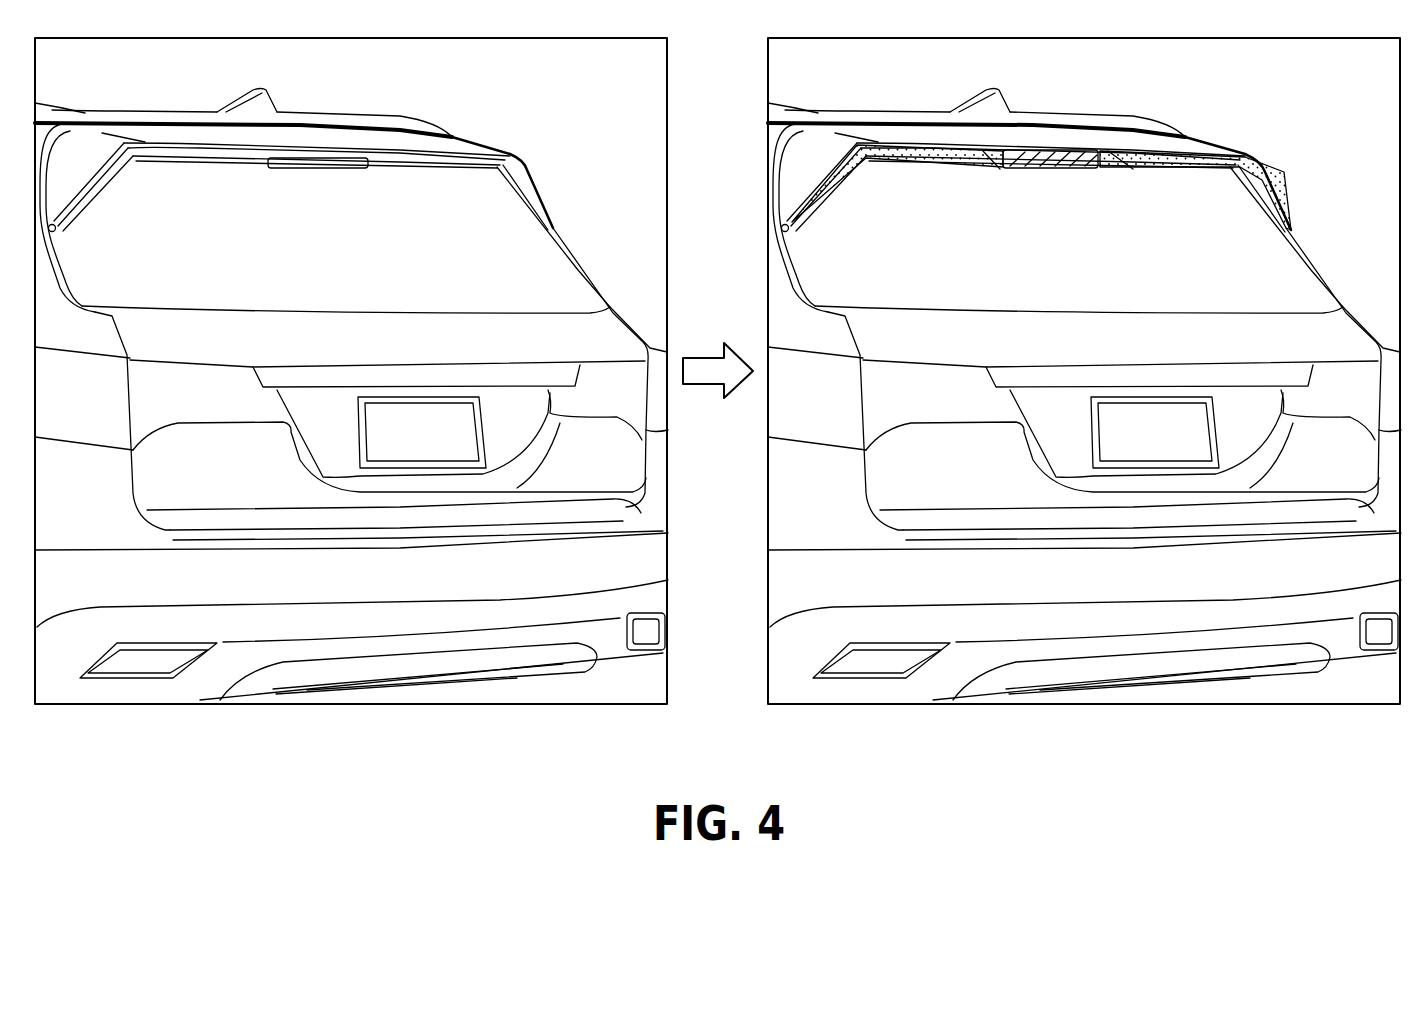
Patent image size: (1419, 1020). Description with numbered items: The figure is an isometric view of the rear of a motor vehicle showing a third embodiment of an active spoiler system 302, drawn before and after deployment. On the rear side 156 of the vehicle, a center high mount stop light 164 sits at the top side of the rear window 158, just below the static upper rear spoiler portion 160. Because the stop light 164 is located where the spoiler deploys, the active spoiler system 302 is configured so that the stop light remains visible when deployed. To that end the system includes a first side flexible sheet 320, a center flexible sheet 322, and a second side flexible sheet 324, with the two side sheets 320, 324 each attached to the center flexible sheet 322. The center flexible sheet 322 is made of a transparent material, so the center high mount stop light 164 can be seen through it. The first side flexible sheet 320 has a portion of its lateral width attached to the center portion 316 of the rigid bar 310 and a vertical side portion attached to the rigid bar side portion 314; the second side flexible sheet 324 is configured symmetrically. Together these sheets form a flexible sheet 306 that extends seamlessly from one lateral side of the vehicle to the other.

The rear side 156 is at (636, 421).
The rear window 158 is at (712, 289).
The static upper rear spoiler portion 160 is at (70, 150).
The center high mount stop light 164 is at (317, 170).
The active spoiler system 302 is at (516, 128).
The flexible sheet 306 is at (1249, 130).
The rigid bar 310 is at (433, 165).
The rigid bar side portion 314 is at (102, 186).
The center portion 316 is at (217, 162).
The first side flexible sheet 320 is at (925, 151).
The center flexible sheet 322 is at (1107, 150).
The second side flexible sheet 324 is at (1200, 166).